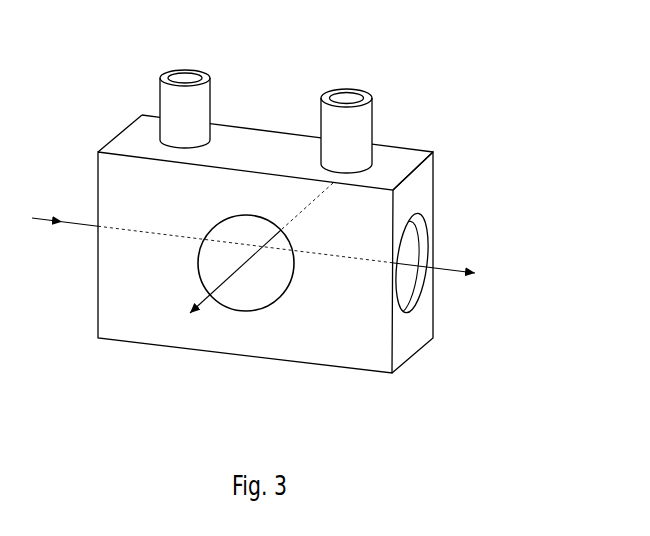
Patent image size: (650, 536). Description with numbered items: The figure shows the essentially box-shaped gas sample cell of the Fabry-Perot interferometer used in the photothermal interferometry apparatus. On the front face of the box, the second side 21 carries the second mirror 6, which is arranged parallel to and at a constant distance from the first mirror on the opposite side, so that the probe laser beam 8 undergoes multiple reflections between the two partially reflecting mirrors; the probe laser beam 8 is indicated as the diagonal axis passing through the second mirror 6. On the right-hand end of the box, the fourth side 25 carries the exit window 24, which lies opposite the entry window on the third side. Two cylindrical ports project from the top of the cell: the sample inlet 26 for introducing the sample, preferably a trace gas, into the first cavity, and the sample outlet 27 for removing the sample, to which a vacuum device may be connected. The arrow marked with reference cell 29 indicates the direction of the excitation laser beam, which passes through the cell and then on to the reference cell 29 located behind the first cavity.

The second mirror 6 is at (250, 310).
The probe laser beam 8 is at (202, 303).
The second side 21 is at (360, 350).
The exit window 24 is at (415, 241).
The fourth side 25 is at (405, 350).
The sample inlet 26 is at (182, 70).
The sample outlet 27 is at (352, 87).
The reference cell 29 is at (450, 273).